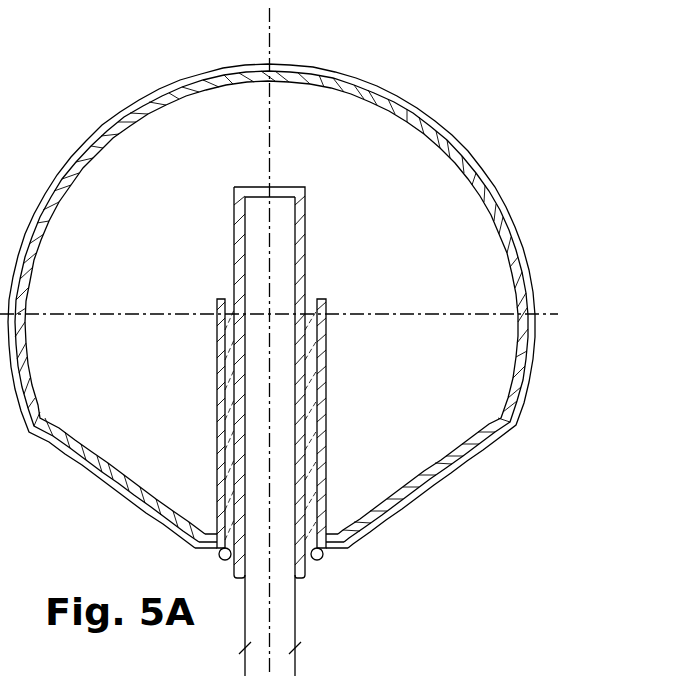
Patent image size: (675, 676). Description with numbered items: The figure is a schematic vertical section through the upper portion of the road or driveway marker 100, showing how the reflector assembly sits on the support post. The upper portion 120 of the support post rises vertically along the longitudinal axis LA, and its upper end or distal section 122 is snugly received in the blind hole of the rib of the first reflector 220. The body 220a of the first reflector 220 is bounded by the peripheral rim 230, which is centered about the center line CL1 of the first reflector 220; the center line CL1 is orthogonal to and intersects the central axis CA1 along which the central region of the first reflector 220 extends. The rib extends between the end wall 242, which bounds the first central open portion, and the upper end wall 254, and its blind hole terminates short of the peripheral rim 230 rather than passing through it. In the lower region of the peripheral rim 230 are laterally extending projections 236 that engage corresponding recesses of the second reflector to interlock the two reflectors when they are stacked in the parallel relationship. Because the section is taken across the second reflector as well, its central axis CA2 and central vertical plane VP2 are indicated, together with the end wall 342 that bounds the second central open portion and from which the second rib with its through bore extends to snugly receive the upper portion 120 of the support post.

The road or driveway marker 100 is at (498, 118).
The upper portion of the support post 120 is at (272, 604).
The upper end or distal section 122 is at (270, 240).
The first reflector 220 is at (307, 306).
The body of the first reflector 220a is at (460, 284).
The peripheral rim 230 is at (509, 207).
The laterally extending projection 236 is at (219, 556).
The end wall 242 is at (326, 354).
The upper end wall 254 is at (258, 187).
The end wall 342 is at (302, 301).
The center line of the first reflector CL1 is at (268, 314).
The central axis of the first reflector CA1 is at (274, 53).
The central axis of the second reflector CA2 is at (270, 23).
The central vertical plane of the second reflector VP2 is at (268, 49).
The longitudinal axis LA is at (273, 23).